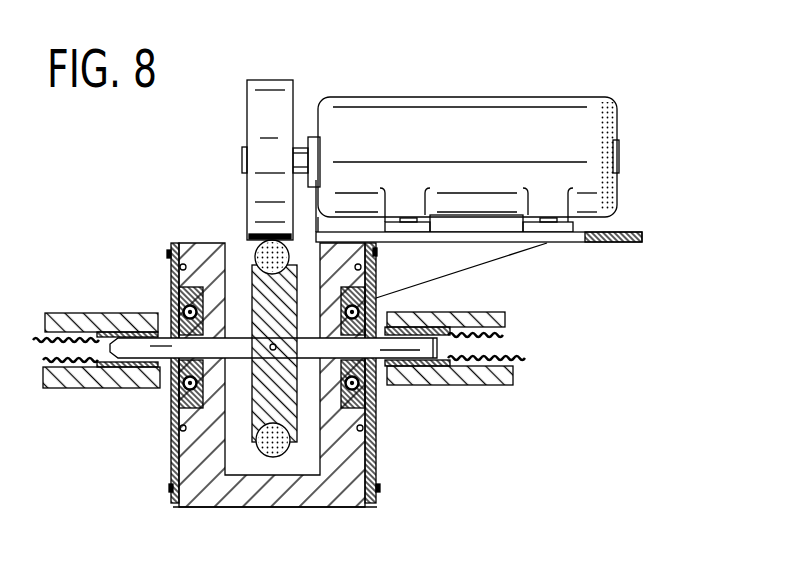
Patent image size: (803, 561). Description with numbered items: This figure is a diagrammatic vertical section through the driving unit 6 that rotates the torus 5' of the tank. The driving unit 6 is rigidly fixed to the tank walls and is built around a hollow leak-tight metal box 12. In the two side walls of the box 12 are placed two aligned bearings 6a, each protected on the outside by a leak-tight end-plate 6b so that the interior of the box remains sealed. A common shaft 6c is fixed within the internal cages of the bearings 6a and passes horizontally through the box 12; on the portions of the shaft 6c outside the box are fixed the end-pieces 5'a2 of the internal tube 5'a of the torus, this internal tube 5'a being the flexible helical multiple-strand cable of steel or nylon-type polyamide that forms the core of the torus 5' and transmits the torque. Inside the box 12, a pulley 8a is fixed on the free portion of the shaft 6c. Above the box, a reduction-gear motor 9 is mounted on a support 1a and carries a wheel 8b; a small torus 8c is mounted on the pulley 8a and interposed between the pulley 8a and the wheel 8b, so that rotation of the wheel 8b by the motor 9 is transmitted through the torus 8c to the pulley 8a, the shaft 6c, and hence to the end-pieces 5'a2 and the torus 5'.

The support 1a is at (608, 243).
The torus 5' is at (318, 312).
The internal tube of the torus 5'a is at (522, 388).
The end-piece of the internal tube 5'a2 is at (449, 402).
The driving unit 6 is at (228, 179).
The bearings 6a is at (176, 389).
The leak-tight end-plates 6b is at (377, 448).
The common shaft 6c is at (150, 347).
The pulley 8a is at (267, 398).
The wheel 8b is at (273, 103).
The torus 8c is at (256, 248).
The reduction-gear motor 9 is at (523, 120).
The hollow leak-tight metal box 12 is at (207, 467).